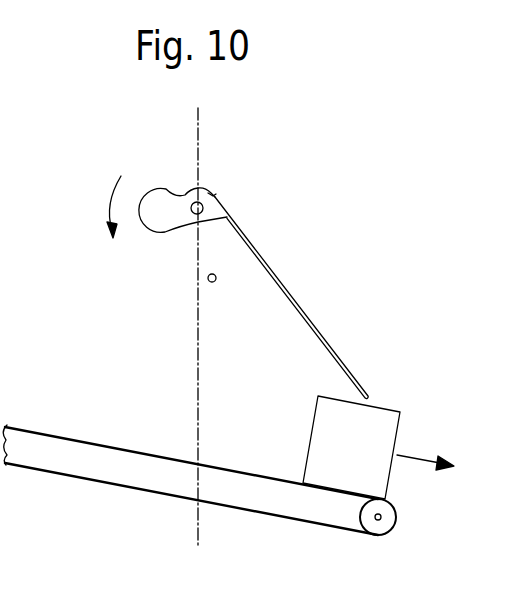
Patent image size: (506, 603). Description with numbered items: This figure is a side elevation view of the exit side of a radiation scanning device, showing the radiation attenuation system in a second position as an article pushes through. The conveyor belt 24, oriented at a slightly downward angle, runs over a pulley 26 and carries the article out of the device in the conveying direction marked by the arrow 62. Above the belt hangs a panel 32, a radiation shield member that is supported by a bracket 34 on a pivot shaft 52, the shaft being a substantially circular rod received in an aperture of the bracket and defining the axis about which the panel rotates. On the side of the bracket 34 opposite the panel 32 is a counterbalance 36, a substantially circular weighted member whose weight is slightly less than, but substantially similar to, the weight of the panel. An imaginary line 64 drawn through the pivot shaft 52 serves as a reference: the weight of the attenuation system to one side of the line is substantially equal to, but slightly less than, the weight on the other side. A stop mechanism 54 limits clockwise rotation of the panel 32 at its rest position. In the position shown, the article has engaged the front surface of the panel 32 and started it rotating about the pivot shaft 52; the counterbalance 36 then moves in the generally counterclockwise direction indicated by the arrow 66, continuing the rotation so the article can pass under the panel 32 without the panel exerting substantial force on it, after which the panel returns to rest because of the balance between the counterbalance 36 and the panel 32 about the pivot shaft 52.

The conveyor belt 24 is at (108, 483).
The pulley 26 is at (372, 523).
The panel 32 is at (302, 311).
The bracket 34 is at (202, 191).
The counterbalance 36 is at (152, 192).
The pivot shaft 52 is at (192, 214).
The stop mechanism 54 is at (216, 278).
The conveying direction arrow 62 is at (418, 452).
The imaginary line 64 is at (198, 118).
The arrow 66 is at (108, 202).